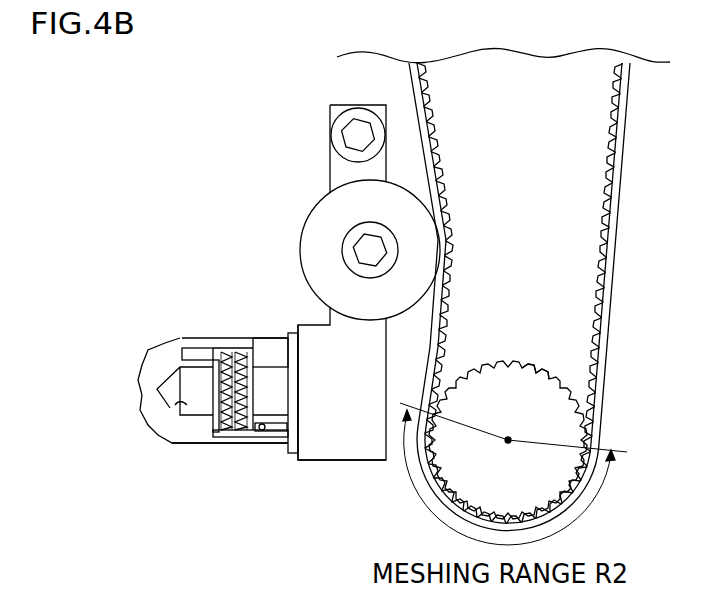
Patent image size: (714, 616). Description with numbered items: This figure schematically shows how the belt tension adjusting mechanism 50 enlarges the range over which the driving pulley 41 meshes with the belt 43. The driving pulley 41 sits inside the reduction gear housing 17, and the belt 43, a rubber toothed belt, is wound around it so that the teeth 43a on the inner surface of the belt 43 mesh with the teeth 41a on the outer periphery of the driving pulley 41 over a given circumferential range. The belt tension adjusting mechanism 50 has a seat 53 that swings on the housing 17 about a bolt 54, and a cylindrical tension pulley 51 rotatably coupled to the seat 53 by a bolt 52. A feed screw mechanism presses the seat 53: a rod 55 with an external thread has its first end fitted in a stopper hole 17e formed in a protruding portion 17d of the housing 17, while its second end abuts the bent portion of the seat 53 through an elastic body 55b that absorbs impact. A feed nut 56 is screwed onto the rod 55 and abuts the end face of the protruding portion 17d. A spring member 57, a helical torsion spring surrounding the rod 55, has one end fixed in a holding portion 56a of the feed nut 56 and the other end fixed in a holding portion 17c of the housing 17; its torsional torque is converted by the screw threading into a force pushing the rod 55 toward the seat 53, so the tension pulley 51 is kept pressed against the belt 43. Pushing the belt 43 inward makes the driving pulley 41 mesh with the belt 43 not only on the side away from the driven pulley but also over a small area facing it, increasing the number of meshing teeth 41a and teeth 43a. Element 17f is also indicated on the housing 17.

The reduction gear housing 17 is at (155, 370).
The holding portion 17c is at (195, 348).
The protruding portion 17d is at (196, 445).
The stopper hole 17e is at (167, 408).
The lower wall of frame 17f is at (230, 440).
The driving pulley 41 is at (502, 412).
The teeth 41a is at (538, 362).
The belt 43 is at (610, 296).
The teeth 43a is at (450, 343).
The belt tension adjusting mechanism 50 is at (266, 170).
The tension pulley 51 is at (315, 237).
The bolt 52 is at (374, 242).
The seat 53 is at (348, 448).
The bolt 54 is at (360, 130).
The rod 55 is at (178, 432).
The elastic body 55b is at (290, 448).
The feed nut 56 is at (264, 345).
The holding portion 56a is at (261, 438).
The spring member 57 is at (230, 355).